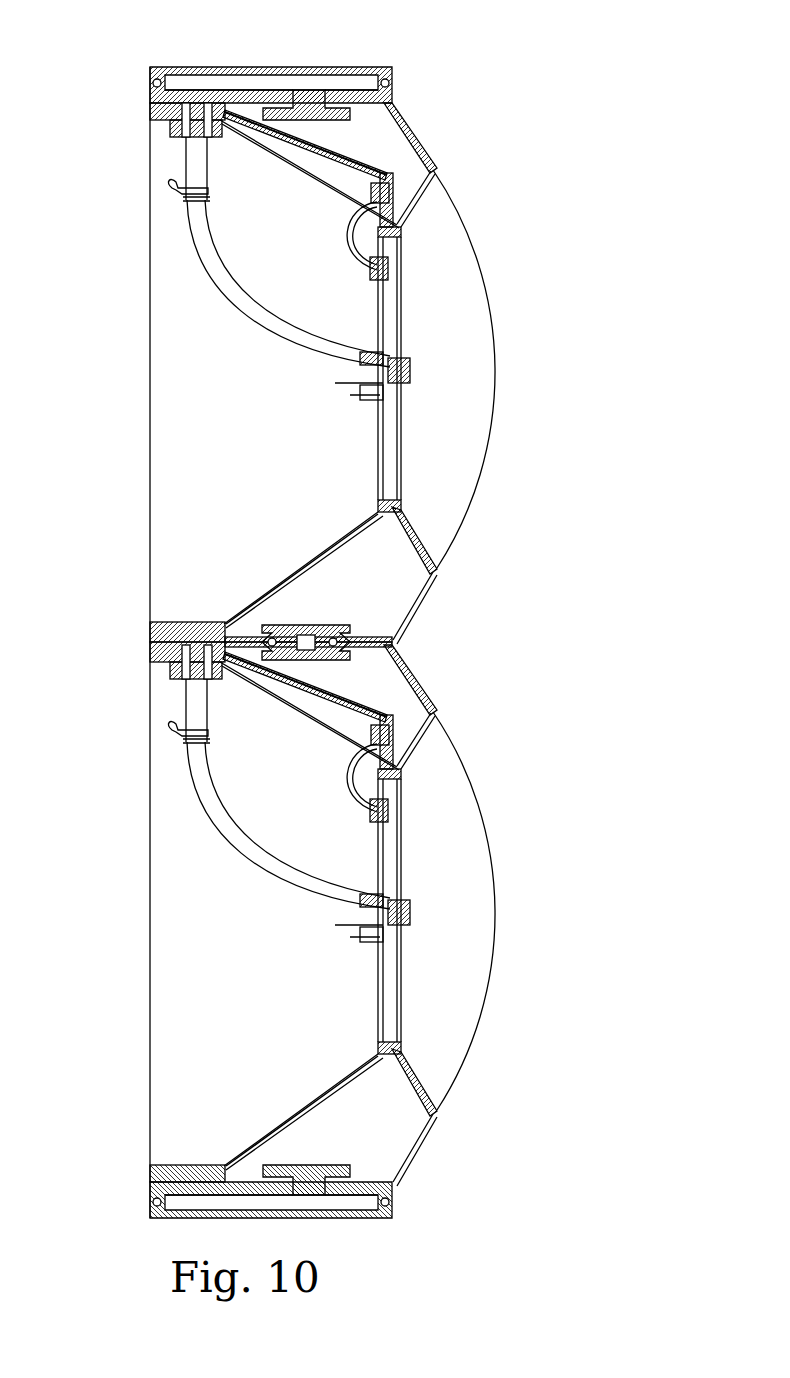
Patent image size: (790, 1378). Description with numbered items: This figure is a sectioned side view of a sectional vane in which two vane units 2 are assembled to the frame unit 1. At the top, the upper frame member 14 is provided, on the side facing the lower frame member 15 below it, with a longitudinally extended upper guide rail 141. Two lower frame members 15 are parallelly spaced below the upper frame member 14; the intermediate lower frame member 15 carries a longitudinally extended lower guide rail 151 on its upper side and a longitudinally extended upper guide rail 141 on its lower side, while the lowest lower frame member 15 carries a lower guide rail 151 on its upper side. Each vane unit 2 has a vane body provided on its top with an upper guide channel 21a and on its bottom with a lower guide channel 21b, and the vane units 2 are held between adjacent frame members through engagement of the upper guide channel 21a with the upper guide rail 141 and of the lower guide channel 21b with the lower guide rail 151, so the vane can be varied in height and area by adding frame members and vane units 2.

The frame unit 1 is at (463, 146).
The vane unit 2 is at (515, 386).
The upper frame member 14 is at (378, 67).
The upper guide rail 141 is at (306, 103).
The lower frame member 15 is at (262, 656).
The lower guide rail 151 is at (341, 628).
The upper guide channel 21a is at (335, 118).
The lower guide channel 21b is at (290, 638).